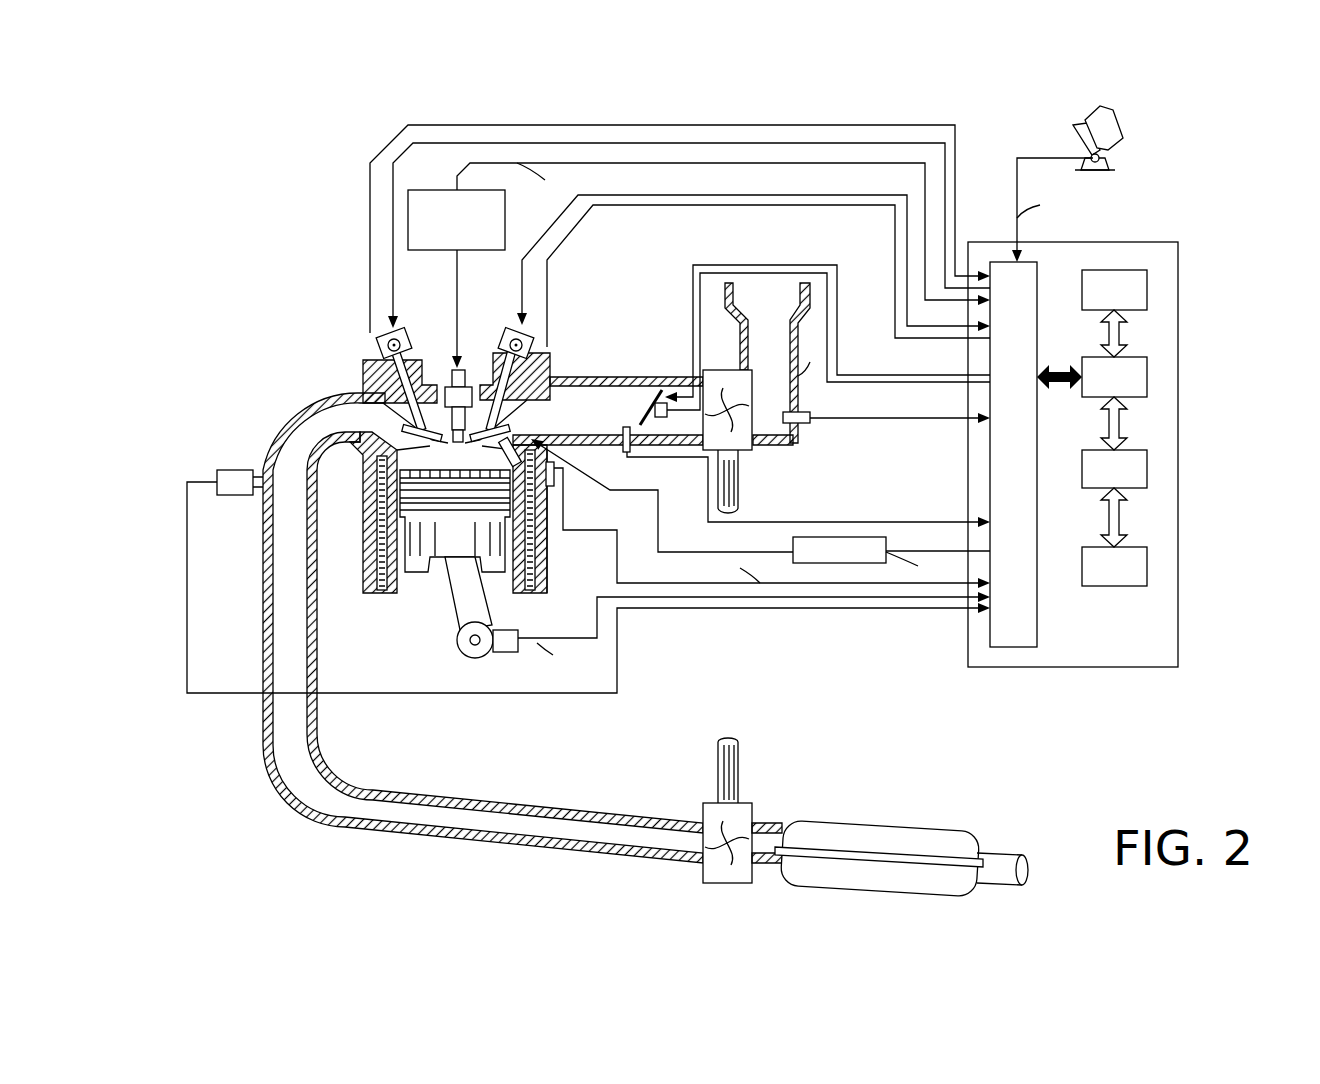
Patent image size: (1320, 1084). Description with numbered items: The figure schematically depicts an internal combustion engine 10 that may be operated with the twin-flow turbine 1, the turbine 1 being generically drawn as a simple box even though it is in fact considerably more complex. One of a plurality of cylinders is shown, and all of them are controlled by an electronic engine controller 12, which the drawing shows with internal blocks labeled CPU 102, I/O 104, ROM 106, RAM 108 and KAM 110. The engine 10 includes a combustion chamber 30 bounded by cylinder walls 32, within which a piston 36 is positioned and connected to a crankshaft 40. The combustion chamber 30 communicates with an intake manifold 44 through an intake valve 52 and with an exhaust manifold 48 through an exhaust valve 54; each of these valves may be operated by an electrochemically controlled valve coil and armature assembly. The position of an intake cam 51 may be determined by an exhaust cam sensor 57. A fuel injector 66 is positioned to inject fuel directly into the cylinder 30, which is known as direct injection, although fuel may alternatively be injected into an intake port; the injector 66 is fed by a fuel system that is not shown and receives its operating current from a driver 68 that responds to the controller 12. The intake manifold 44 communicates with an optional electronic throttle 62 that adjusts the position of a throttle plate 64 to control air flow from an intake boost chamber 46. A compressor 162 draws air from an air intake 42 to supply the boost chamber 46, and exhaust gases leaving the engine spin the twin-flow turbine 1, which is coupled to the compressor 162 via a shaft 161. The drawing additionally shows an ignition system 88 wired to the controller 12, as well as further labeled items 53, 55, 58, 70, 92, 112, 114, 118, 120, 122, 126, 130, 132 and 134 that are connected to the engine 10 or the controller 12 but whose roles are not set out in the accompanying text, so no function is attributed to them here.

The twin-flow turbine 1 is at (703, 803).
The internal combustion engine 10 is at (298, 313).
The electronic engine controller 12 is at (1168, 242).
The combustion chamber 30 is at (378, 545).
The cylinder walls 32 is at (403, 585).
The piston 36 is at (440, 548).
The crankshaft 40 is at (462, 655).
The air intake 42 is at (753, 337).
The intake manifold 44 is at (565, 419).
The intake boost chamber 46 is at (671, 432).
The exhaust manifold 48 is at (320, 428).
The intake cam 51 is at (505, 330).
The intake valve 52 is at (500, 428).
The exhaust cam actuator 53 is at (680, 229).
The exhaust valve 54 is at (400, 405).
The intake valve position sensor 55 is at (530, 350).
The exhaust cam sensor 57 is at (380, 345).
The throttle actuator 58 is at (662, 392).
The electronic throttle 62 is at (636, 386).
The throttle plate 64 is at (643, 378).
The fuel injector 66 is at (547, 448).
The driver 68 is at (810, 563).
The catalytic converter 70 is at (790, 888).
The ignition system 88 is at (427, 190).
The spark plug 92 is at (459, 368).
The microprocessor unit 102 is at (1147, 372).
The input/output ports 104 is at (1037, 268).
The read only memory 106 is at (1147, 290).
The random access memory 108 is at (1147, 470).
The keep alive memory 110 is at (1147, 565).
The engine coolant temperature sensor 112 is at (551, 486).
The cooling sleeve 114 is at (543, 562).
The Hall effect sensor 118 is at (505, 652).
The mass air flow sensor 120 is at (810, 414).
The pressure sensor 122 is at (627, 427).
The exhaust gas oxygen sensor 126 is at (217, 472).
The accelerator pedal 130 is at (1078, 128).
The foot 132 is at (1120, 122).
The pedal position sensor 134 is at (1107, 162).
The shaft 161 is at (740, 490).
The compressor 162 is at (737, 370).